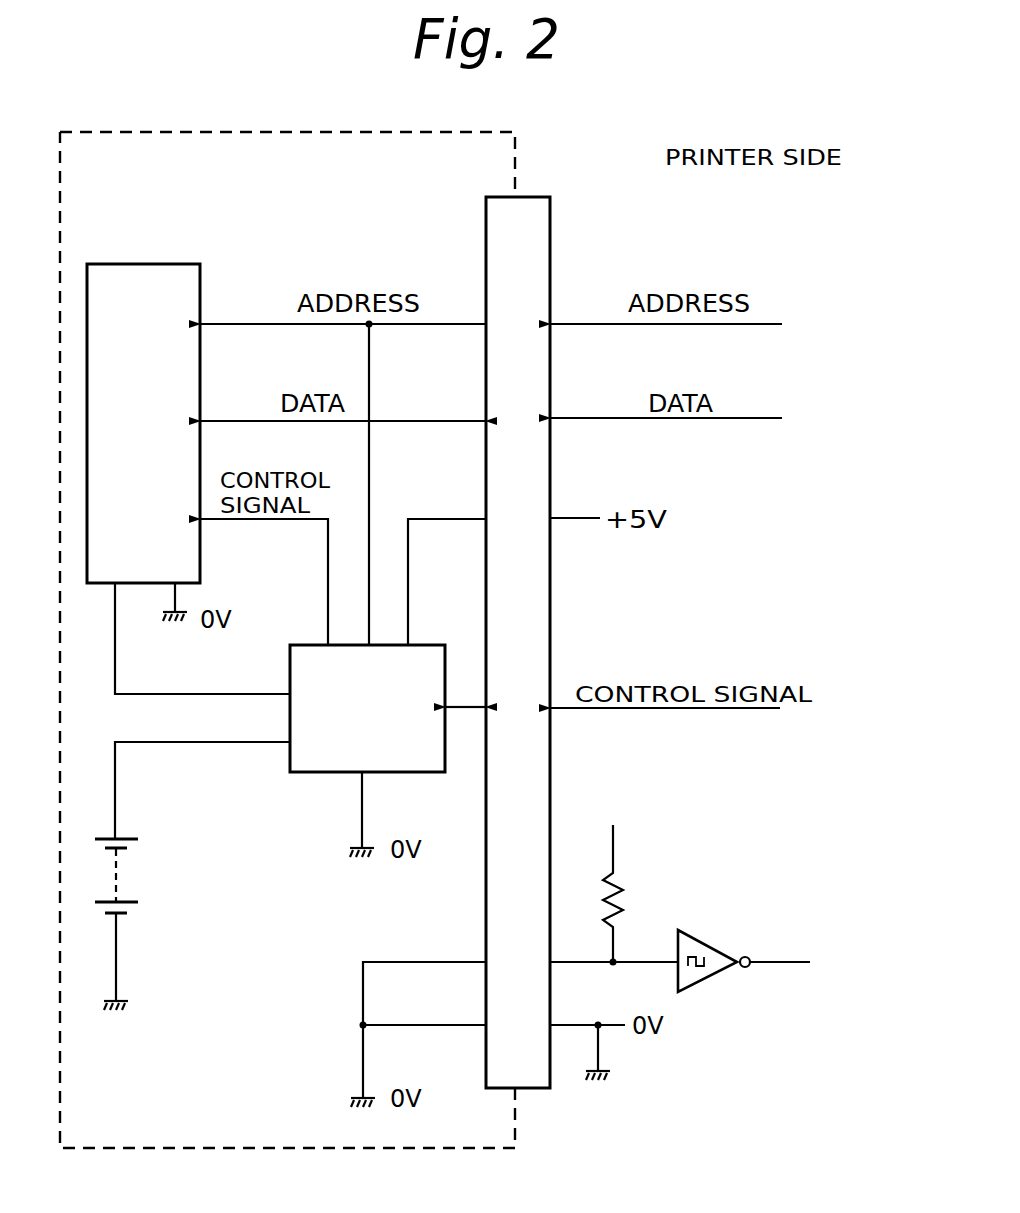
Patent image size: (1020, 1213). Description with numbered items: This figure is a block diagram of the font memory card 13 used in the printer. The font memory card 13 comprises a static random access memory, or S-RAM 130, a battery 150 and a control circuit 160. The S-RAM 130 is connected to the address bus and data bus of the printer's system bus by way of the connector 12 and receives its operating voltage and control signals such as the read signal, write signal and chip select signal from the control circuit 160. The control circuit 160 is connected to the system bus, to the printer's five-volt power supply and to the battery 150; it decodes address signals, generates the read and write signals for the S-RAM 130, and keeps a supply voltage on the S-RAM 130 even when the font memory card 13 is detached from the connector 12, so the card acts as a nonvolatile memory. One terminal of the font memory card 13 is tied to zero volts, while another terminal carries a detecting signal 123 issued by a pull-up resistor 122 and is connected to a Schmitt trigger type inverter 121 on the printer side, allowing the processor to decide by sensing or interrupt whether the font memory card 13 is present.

The connector 12 is at (553, 198).
The font memory card 13 is at (316, 131).
The Schmitt trigger type inverter 121 is at (710, 940).
The pull-up resistor 122 is at (640, 898).
The detecting signal 123 is at (785, 983).
The static random access memory 130 is at (168, 265).
The battery 150 is at (145, 840).
The control circuit 160 is at (432, 642).